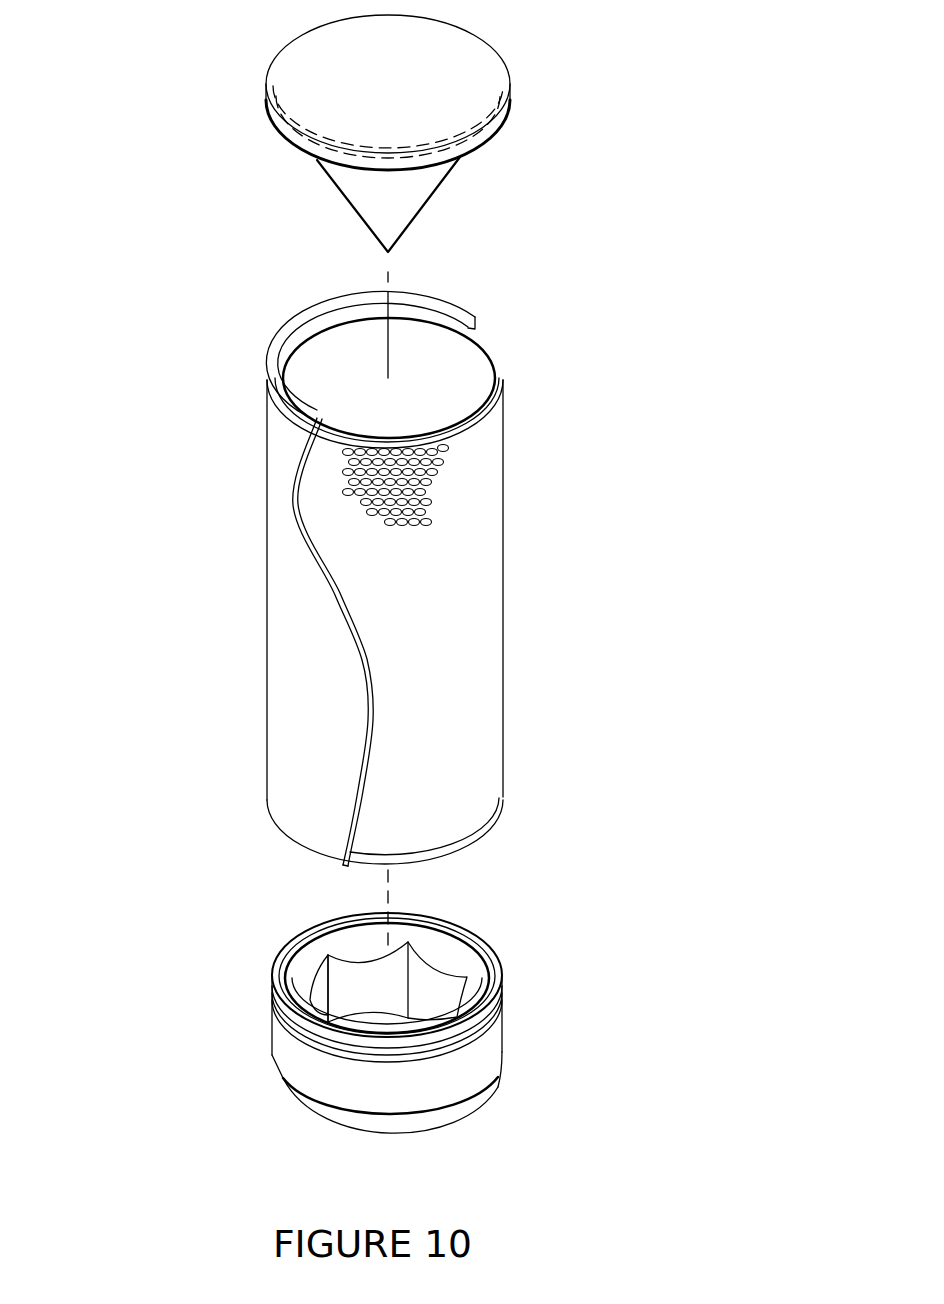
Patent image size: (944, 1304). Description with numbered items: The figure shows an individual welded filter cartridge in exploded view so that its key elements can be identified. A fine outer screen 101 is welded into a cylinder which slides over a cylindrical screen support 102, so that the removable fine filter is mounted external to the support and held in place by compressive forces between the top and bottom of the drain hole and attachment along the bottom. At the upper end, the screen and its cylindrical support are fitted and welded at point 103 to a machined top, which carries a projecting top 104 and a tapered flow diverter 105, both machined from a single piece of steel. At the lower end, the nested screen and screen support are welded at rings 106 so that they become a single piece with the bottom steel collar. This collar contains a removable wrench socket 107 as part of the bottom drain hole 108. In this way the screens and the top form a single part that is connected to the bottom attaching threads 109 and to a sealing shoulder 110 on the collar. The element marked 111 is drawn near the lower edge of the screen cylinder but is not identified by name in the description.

The outer screen 101 is at (288, 588).
The screen support 102 is at (455, 597).
The weld point 103 is at (283, 138).
The projecting top 104 is at (410, 90).
The tapered flow diverter 105 is at (395, 210).
The rings 106 is at (483, 1017).
The removable wrench socket 107 is at (353, 992).
The bottom drain hole 108 is at (383, 1027).
The bottom attaching threads 109 is at (453, 1112).
The sealing shoulder 110 is at (482, 1057).
The bottom rim 111 is at (290, 843).